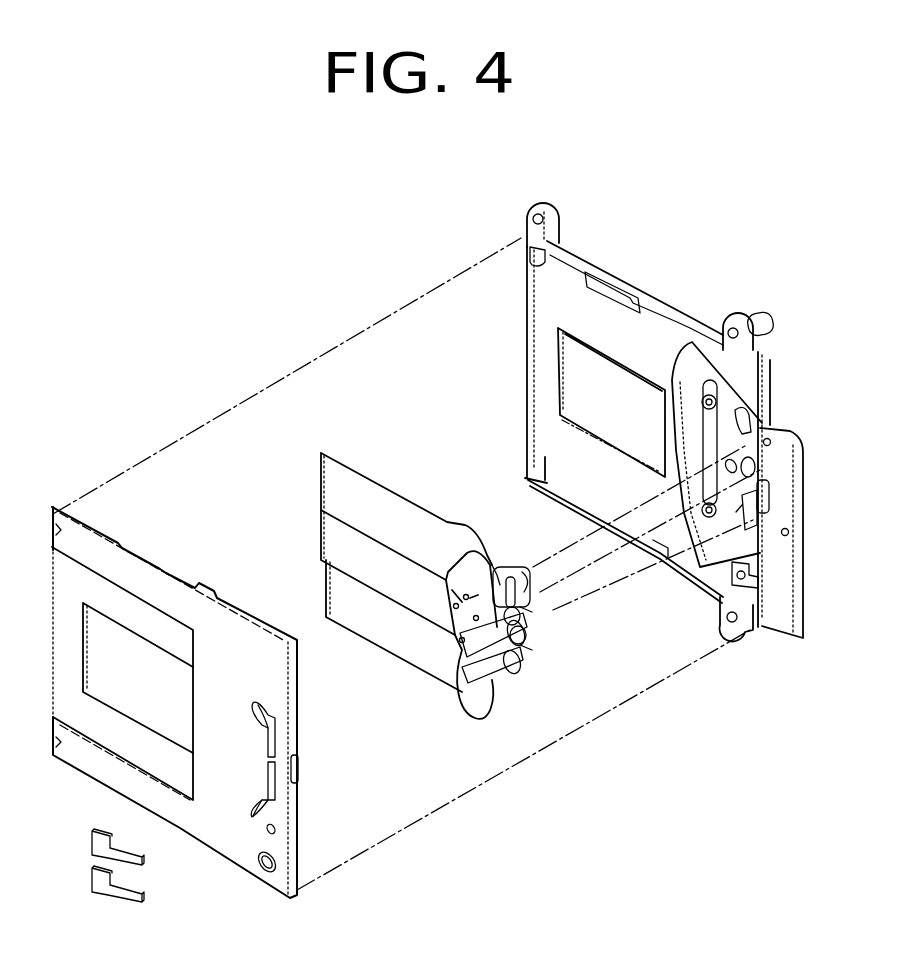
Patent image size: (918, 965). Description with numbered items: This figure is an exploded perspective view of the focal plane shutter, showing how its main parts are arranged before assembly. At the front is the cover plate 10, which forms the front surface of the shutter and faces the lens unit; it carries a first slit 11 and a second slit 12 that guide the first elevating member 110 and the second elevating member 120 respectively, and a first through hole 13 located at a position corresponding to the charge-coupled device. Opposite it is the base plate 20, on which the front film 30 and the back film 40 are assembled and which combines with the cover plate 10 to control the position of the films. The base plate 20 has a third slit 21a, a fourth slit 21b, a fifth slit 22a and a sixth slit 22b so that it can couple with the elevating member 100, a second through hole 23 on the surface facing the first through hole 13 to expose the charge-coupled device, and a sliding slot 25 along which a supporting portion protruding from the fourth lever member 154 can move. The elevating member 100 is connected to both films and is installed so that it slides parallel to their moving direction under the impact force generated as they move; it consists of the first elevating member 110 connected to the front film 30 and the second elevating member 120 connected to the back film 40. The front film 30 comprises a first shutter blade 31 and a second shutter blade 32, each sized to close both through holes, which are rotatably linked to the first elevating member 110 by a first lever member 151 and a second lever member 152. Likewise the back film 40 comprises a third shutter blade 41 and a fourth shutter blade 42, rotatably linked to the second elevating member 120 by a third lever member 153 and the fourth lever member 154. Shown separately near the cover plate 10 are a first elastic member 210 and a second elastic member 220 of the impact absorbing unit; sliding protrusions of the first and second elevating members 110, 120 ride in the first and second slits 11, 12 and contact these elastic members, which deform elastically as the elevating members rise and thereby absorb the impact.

The cover plate 10 is at (230, 853).
The first slit 11 is at (278, 790).
The second slit 12 is at (277, 737).
The first through hole 13 is at (100, 650).
The base plate 20 is at (777, 627).
The third slit 21a is at (762, 428).
The fourth slit 21b is at (757, 460).
The fifth slit 22a is at (770, 487).
The sixth slit 22b is at (757, 518).
The second through hole 23 is at (607, 370).
The sliding slot 25 is at (740, 408).
The front film 30 is at (433, 662).
The first shutter blade 31 is at (398, 650).
The second shutter blade 32 is at (475, 657).
The back film 40 is at (354, 572).
The third shutter blade 41 is at (323, 482).
The fourth shutter blade 42 is at (330, 538).
The elevating member 100 is at (593, 643).
The first elevating member 110 is at (556, 643).
The second elevating member 120 is at (523, 592).
The first lever member 151 is at (480, 687).
The second lever member 152 is at (483, 670).
The third lever member 153 is at (510, 562).
The fourth lever member 154 is at (527, 598).
The first elastic member 210 is at (92, 881).
The second elastic member 220 is at (92, 843).